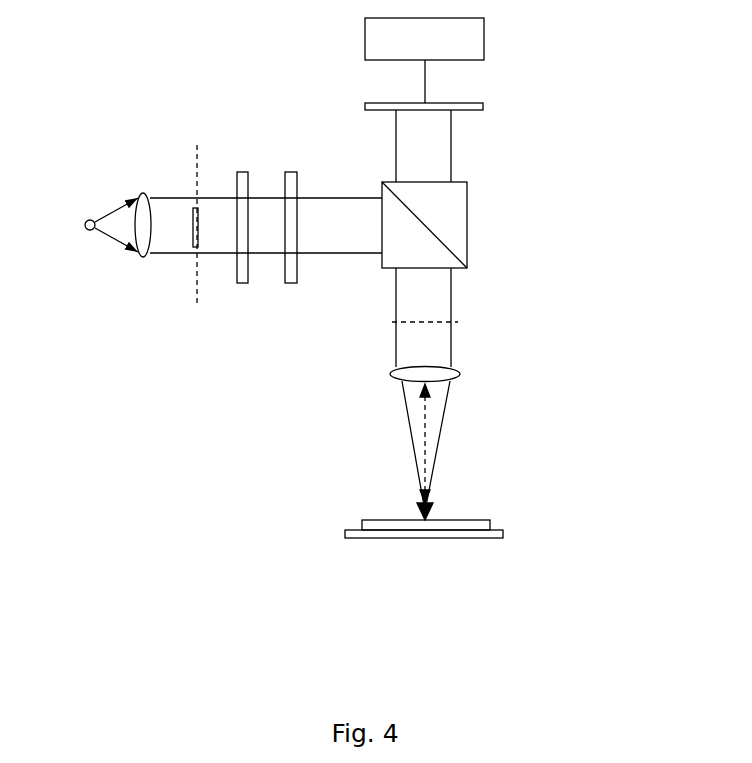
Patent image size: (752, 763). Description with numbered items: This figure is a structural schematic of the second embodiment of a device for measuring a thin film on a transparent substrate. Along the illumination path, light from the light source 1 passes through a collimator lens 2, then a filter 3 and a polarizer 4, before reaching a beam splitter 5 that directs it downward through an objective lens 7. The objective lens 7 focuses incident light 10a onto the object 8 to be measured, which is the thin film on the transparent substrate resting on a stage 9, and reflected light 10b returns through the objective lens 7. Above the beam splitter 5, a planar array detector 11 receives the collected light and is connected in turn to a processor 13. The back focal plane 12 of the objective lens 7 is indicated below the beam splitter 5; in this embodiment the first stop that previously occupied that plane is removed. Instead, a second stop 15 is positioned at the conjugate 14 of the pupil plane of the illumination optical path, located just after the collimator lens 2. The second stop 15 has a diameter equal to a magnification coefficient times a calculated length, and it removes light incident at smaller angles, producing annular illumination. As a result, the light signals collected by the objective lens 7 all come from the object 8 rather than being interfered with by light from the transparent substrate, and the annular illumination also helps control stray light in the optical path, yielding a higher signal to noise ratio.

The light source 1 is at (80, 223).
The collimator lens 2 is at (141, 186).
The filter 3 is at (236, 275).
The polarizer 4 is at (283, 275).
The beam splitter 5 is at (381, 269).
The objective lens 7 is at (442, 365).
The object to be measured 8 is at (394, 517).
The stage 9 is at (498, 524).
The incident light 10a is at (432, 496).
The reflected light 10b is at (431, 422).
The planar array detector 11 is at (455, 100).
The back focal plane of the objective lens 12 is at (391, 322).
The processor 13 is at (424, 60).
The conjugate of a pupil plane of an illumination optical path 14 is at (194, 283).
The second stop 15 is at (191, 207).